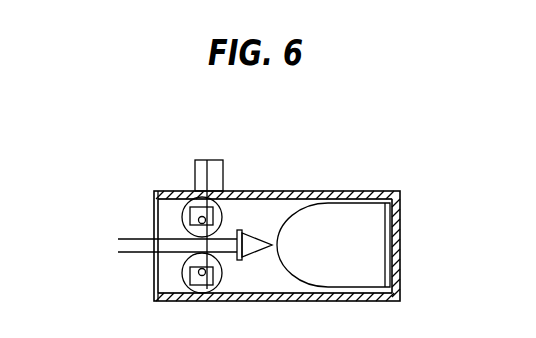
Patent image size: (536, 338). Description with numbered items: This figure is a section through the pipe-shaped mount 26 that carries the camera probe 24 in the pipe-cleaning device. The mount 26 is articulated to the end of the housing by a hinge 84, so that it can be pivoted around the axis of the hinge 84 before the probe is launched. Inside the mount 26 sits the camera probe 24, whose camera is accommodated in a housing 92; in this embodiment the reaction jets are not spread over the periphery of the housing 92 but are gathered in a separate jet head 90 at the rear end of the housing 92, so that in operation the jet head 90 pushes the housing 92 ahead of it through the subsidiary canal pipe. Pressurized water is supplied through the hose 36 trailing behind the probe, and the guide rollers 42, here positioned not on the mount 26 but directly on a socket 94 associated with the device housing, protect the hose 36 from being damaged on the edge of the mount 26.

The mount 26 is at (347, 110).
The socket 94 is at (173, 190).
The camera probe 24 is at (270, 212).
The hinge 84 is at (208, 160).
The hose 36 is at (128, 238).
The guide rollers 42 is at (183, 280).
The jet head 90 is at (258, 230).
The housing 92 is at (351, 203).